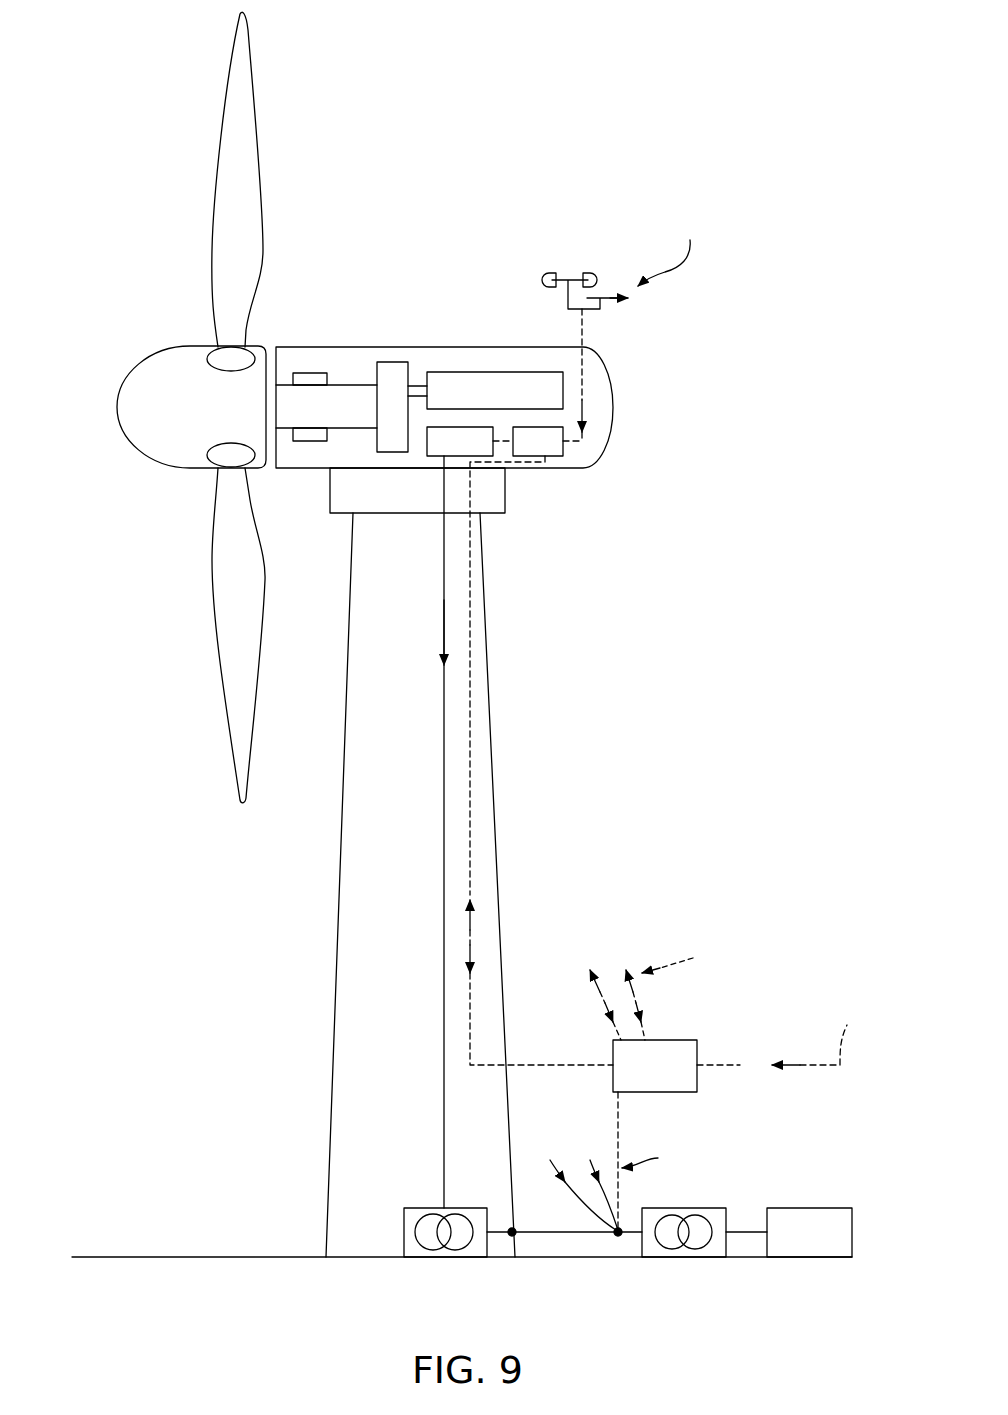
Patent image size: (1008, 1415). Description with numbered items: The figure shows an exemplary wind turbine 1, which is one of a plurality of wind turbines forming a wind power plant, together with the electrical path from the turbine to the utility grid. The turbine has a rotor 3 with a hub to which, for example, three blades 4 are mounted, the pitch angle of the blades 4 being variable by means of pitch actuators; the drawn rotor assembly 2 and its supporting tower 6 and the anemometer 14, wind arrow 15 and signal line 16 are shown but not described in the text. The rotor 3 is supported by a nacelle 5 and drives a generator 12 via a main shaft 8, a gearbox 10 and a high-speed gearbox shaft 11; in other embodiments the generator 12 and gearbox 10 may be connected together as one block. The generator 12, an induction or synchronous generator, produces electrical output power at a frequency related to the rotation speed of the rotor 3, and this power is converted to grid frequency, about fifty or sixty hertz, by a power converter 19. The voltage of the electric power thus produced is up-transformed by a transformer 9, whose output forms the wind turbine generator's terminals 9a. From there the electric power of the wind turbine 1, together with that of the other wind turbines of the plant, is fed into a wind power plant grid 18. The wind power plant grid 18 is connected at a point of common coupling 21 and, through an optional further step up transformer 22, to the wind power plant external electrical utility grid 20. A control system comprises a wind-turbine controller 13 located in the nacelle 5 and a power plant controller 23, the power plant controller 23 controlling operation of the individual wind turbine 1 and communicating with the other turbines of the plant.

The wind turbine 1 is at (548, 120).
The rotor 2 is at (138, 275).
The rotor 3 is at (117, 408).
The blades 4 is at (258, 120).
The nacelle 5 is at (292, 346).
The tower 6 is at (335, 968).
The main shaft 8 is at (342, 385).
The transformer 9 is at (410, 1210).
The wind turbine generator's terminals 9a is at (512, 1238).
The gearbox 10 is at (388, 362).
The high-speed gearbox shaft 11 is at (415, 385).
The generator 12 is at (497, 372).
The wind-turbine controller 13 is at (545, 456).
The anemometer 14 is at (586, 272).
The wind 15 is at (672, 246).
The measurement signal line 16 is at (584, 372).
The wind power plant grid 18 is at (563, 1235).
The power converter 19 is at (440, 458).
The electrical utility grid 20 is at (820, 1258).
The point of common coupling 21 is at (617, 1238).
The step up transformer 22 is at (718, 1252).
The power plant controller 23 is at (700, 1050).